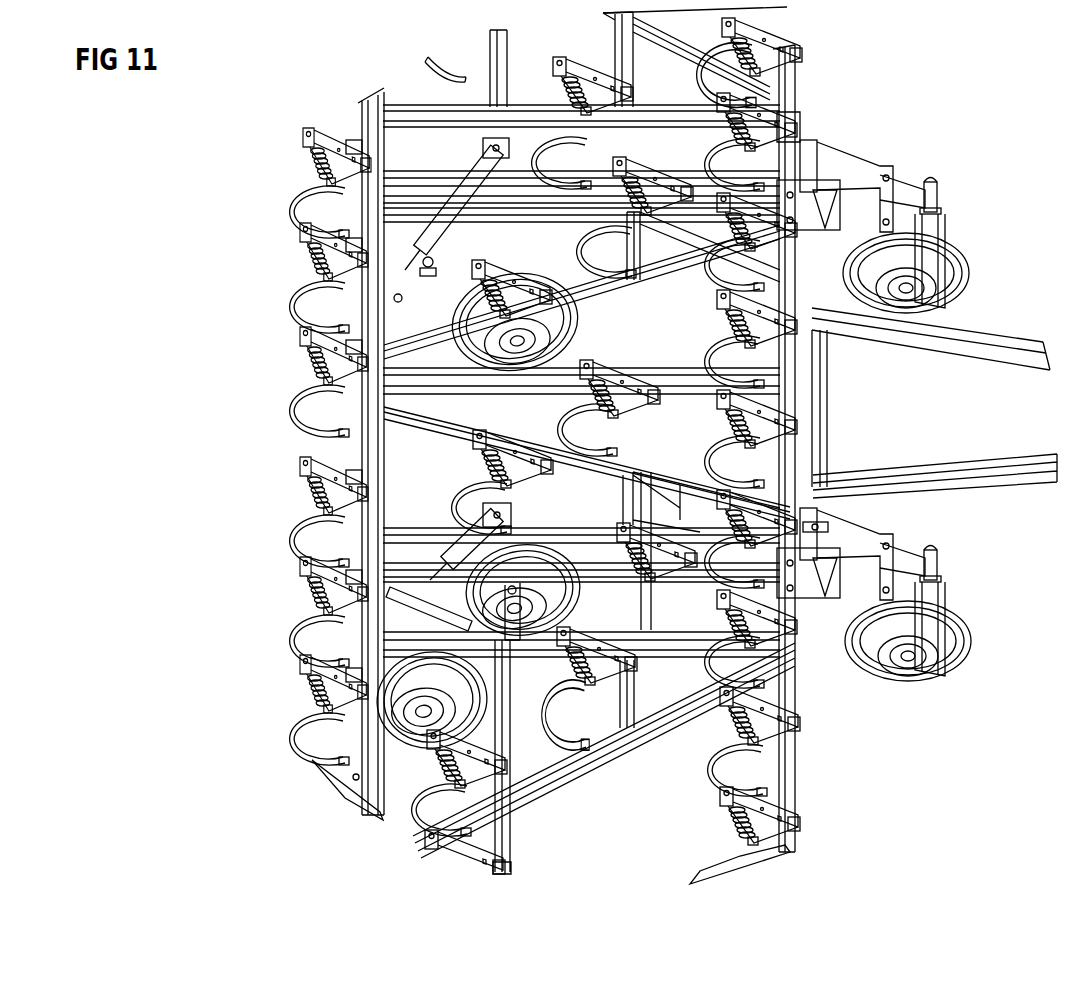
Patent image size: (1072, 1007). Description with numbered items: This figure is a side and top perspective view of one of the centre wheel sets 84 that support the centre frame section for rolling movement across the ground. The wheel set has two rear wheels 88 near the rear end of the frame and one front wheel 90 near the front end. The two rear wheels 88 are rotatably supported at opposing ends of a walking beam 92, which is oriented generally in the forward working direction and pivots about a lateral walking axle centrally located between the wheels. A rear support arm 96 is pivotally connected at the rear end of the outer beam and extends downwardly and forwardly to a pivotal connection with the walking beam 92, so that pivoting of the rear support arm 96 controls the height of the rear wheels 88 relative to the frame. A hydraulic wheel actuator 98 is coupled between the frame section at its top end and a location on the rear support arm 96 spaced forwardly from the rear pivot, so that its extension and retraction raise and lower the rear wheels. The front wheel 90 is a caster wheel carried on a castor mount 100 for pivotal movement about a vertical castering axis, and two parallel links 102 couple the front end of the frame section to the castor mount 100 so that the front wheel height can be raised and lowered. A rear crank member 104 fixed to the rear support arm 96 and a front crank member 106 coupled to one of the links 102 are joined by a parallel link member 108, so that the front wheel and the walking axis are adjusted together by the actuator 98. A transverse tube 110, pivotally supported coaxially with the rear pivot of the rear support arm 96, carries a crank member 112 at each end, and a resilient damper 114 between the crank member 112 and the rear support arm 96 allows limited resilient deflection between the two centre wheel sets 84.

The centre wheel set 84 is at (210, 218).
The rear wheel 88 is at (578, 610).
The front wheel 90 is at (968, 645).
The walking beam 92 is at (498, 622).
The rear support arm 96 is at (433, 613).
The hydraulic wheel actuator 98 is at (483, 549).
The castor mount 100 is at (937, 547).
The parallel link 102 is at (864, 545).
The rear crank member 104 is at (372, 548).
The front crank member 106 is at (822, 527).
The parallel link member 108 is at (597, 530).
The transverse tube 110 is at (393, 306).
The crank member 112 is at (425, 260).
The resilient damper 114 is at (395, 300).